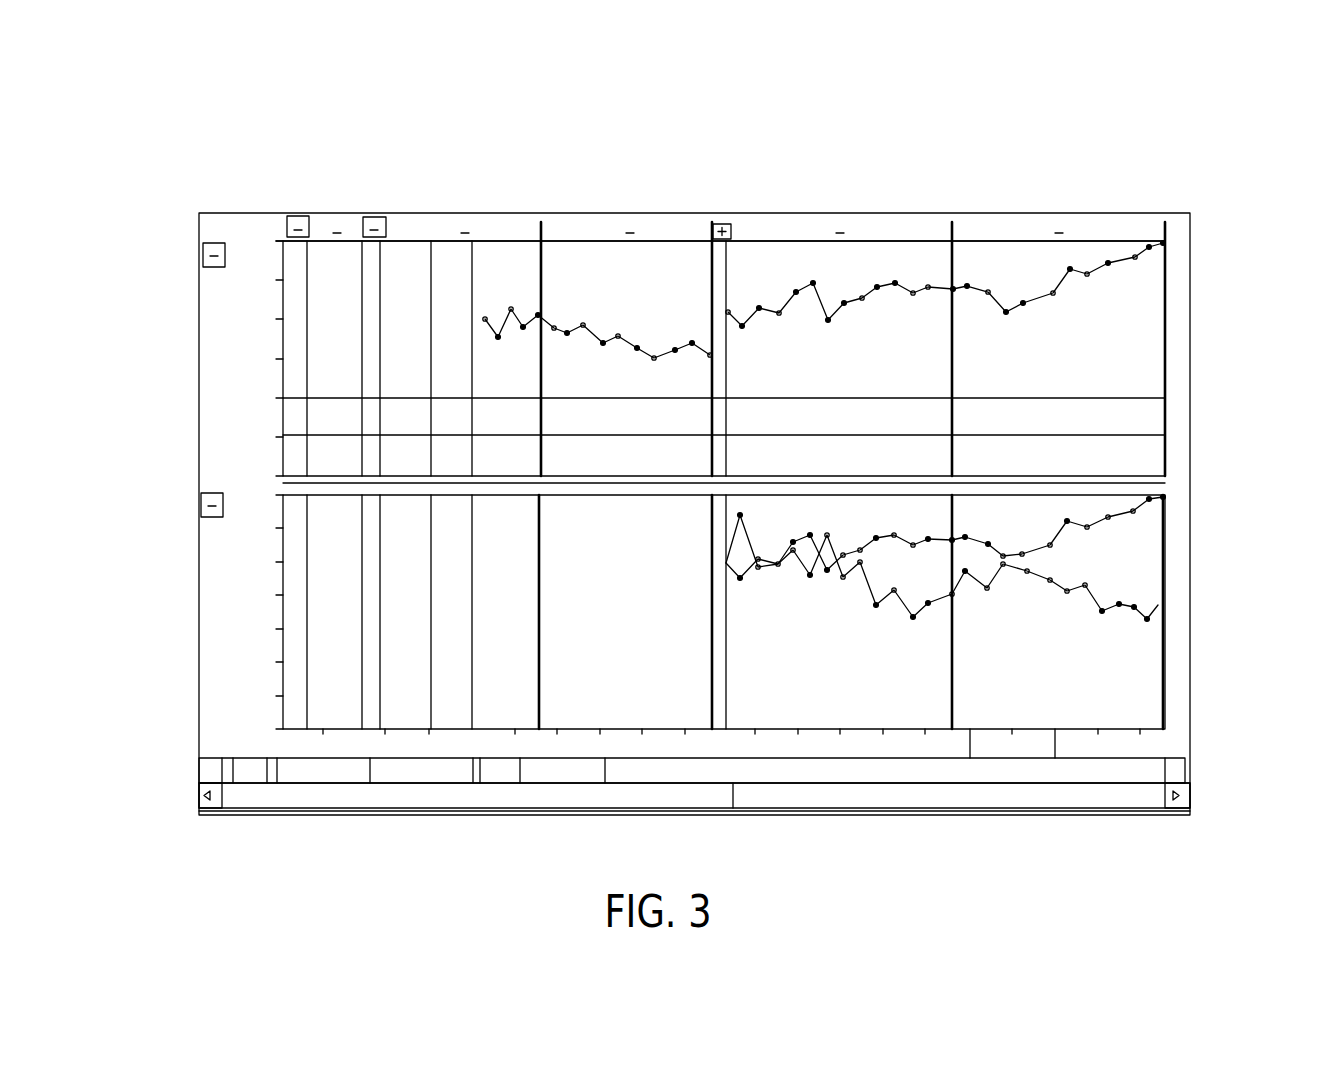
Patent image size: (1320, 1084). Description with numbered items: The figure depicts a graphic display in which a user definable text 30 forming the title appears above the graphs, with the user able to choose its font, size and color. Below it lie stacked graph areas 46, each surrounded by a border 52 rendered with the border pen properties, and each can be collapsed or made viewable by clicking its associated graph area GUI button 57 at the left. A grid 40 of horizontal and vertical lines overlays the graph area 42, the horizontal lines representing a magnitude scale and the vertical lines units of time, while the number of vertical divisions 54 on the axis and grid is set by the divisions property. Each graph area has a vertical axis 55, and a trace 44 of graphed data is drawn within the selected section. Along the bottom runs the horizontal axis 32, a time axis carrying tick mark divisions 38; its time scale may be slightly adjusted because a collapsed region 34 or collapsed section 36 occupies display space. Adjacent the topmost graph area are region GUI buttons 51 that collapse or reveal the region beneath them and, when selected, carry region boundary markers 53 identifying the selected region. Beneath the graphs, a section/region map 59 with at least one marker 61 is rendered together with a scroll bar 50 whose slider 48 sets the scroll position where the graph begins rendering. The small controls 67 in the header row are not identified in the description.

The user definable text 30 is at (710, 173).
The horizontal axis 32 is at (1120, 727).
The collapsed region 34 is at (720, 288).
The collapsed section 36 is at (290, 318).
The tick mark divisions 38 is at (970, 733).
The grid 40 is at (449, 423).
The graph area 42 is at (1075, 338).
The trace 44 is at (1163, 507).
The graph area 46 is at (613, 302).
The slider 48 is at (480, 795).
The scroll bar 50 is at (790, 793).
The region GUI buttons 51 is at (1048, 230).
The border 52 is at (1165, 345).
The region boundary markers 53 is at (950, 368).
The vertical divisions 54 is at (278, 392).
The vertical axis 55 is at (283, 625).
The graph area GUI button 57 is at (203, 243).
The section/region map 59 is at (403, 772).
The marker 61 is at (603, 770).
The segment collapse control 67 is at (296, 216).